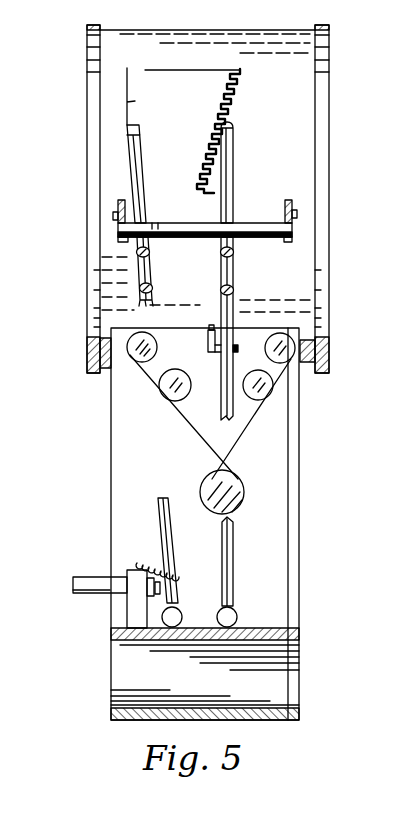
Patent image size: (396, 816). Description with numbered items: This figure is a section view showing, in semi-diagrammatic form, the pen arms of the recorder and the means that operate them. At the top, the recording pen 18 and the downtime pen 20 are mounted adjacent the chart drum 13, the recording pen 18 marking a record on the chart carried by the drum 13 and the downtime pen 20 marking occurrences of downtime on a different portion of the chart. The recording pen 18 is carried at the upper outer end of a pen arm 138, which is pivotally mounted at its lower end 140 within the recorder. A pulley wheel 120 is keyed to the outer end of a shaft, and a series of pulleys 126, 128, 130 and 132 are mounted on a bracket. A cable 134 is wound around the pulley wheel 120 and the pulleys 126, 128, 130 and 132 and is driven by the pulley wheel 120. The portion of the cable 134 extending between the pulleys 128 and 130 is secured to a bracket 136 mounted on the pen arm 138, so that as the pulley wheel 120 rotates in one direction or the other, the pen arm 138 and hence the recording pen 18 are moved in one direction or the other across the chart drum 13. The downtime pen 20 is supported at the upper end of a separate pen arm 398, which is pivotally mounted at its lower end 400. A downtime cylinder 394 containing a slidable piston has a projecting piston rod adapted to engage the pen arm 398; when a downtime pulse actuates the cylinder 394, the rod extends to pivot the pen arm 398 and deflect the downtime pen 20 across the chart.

The drum 13 is at (87, 93).
The recording pen 18 is at (233, 127).
The downtime pen 20 is at (141, 140).
The pulley wheel 120 is at (238, 498).
The pulley 126 is at (177, 389).
The pulley 128 is at (132, 339).
The pulley 130 is at (293, 345).
The pulley 132 is at (258, 389).
The cable 134 is at (236, 441).
The bracket 136 is at (211, 325).
The pen arm 138 is at (233, 317).
The lower end 140 is at (233, 611).
The downtime cylinder 394 is at (98, 579).
The pen arm 398 is at (162, 513).
The lower end 400 is at (176, 611).